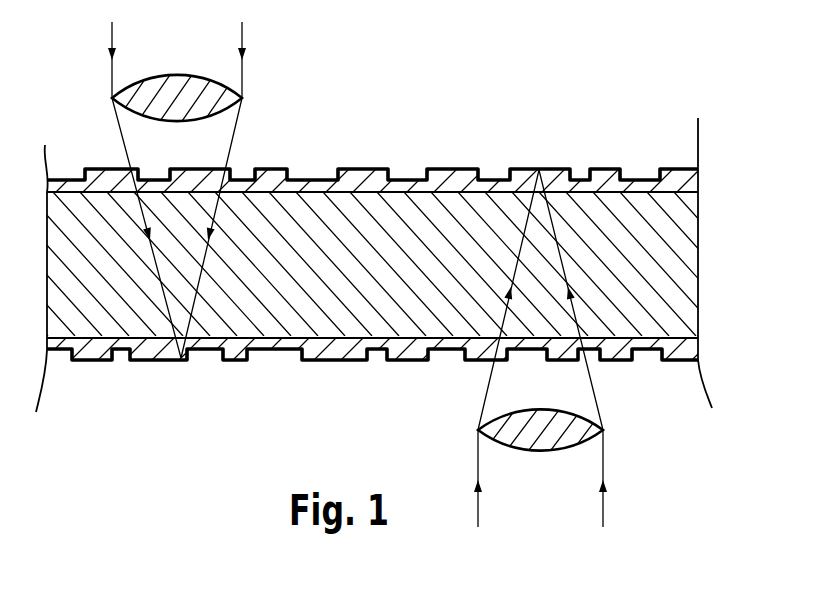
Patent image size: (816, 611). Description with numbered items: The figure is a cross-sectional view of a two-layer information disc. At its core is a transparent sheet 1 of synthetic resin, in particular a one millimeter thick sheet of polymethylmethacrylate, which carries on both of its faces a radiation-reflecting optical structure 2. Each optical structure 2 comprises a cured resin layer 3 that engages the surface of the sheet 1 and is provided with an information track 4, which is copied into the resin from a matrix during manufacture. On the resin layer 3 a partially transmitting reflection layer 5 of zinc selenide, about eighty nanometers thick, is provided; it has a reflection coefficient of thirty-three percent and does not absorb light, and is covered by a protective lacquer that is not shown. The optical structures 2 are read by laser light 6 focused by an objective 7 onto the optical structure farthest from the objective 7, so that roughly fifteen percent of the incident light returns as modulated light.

The transparent sheet 1 is at (672, 243).
The radiation-reflecting optical structure 2 is at (374, 256).
The cured resin layer 3 is at (680, 180).
The information track 4 is at (648, 188).
The partially transmitting reflection layer 5 is at (452, 168).
The laser light 6 is at (603, 468).
The objective 7 is at (580, 430).